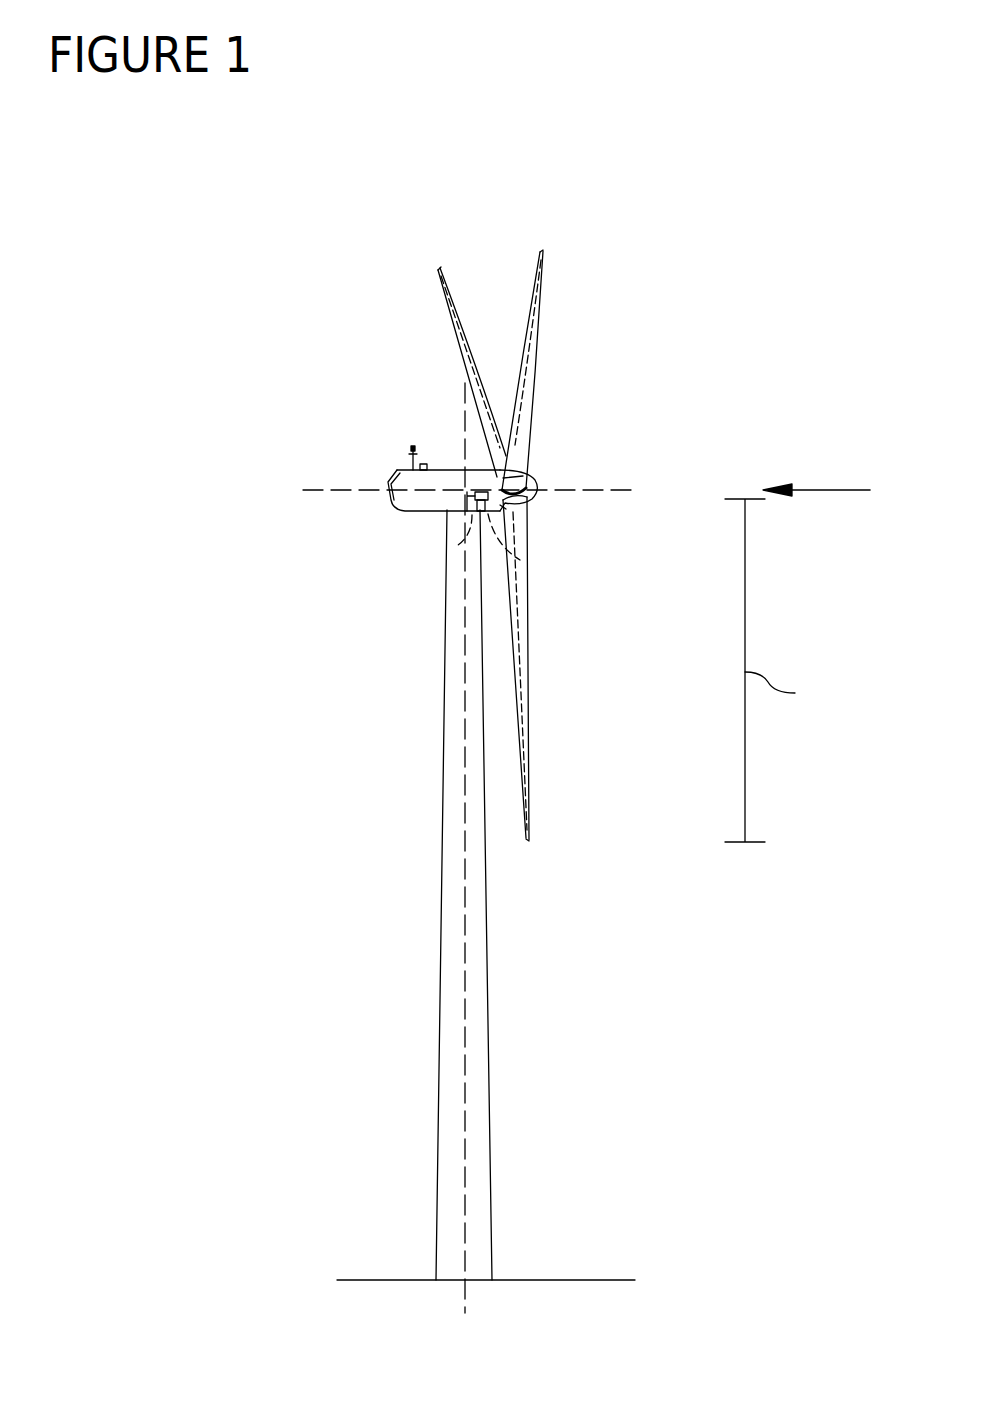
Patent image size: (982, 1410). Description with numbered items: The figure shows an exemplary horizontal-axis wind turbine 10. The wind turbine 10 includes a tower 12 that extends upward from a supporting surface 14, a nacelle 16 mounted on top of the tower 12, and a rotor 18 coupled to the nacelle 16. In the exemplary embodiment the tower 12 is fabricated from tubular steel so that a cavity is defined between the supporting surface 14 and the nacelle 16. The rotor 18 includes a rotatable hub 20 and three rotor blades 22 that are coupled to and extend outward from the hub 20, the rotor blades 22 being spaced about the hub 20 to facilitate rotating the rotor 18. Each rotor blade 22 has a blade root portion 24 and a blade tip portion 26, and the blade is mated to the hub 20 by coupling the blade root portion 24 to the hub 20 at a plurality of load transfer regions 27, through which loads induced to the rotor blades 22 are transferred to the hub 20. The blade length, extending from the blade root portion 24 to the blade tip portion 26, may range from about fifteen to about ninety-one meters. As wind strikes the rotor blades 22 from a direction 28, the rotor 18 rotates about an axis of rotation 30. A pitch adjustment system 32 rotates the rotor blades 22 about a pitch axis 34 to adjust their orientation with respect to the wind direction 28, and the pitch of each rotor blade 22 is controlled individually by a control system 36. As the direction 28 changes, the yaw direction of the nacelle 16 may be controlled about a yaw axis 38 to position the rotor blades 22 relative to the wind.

The wind turbine 10 is at (225, 281).
The tower 12 is at (438, 1050).
The supporting surface 14 is at (393, 1280).
The nacelle 16 is at (417, 513).
The rotor 18 is at (540, 393).
The rotatable hub 20 is at (525, 482).
The rotor blade 22 is at (458, 338).
The blade root portion 24 is at (520, 463).
The blade tip portion 26 is at (438, 270).
The load transfer regions 27 is at (503, 507).
The direction 28 is at (838, 490).
The axis of rotation 30 is at (600, 490).
The pitch adjustment system 32 is at (520, 560).
The pitch axis 34 is at (430, 276).
The control system 36 is at (458, 545).
The yaw axis 38 is at (467, 1003).